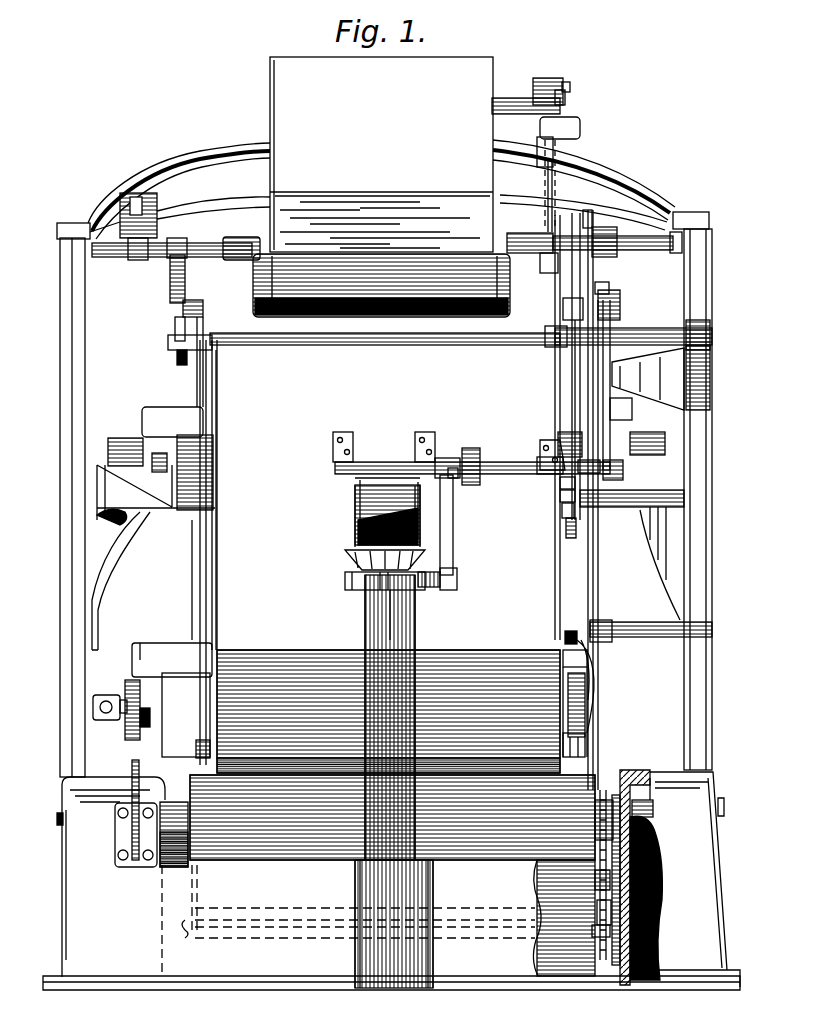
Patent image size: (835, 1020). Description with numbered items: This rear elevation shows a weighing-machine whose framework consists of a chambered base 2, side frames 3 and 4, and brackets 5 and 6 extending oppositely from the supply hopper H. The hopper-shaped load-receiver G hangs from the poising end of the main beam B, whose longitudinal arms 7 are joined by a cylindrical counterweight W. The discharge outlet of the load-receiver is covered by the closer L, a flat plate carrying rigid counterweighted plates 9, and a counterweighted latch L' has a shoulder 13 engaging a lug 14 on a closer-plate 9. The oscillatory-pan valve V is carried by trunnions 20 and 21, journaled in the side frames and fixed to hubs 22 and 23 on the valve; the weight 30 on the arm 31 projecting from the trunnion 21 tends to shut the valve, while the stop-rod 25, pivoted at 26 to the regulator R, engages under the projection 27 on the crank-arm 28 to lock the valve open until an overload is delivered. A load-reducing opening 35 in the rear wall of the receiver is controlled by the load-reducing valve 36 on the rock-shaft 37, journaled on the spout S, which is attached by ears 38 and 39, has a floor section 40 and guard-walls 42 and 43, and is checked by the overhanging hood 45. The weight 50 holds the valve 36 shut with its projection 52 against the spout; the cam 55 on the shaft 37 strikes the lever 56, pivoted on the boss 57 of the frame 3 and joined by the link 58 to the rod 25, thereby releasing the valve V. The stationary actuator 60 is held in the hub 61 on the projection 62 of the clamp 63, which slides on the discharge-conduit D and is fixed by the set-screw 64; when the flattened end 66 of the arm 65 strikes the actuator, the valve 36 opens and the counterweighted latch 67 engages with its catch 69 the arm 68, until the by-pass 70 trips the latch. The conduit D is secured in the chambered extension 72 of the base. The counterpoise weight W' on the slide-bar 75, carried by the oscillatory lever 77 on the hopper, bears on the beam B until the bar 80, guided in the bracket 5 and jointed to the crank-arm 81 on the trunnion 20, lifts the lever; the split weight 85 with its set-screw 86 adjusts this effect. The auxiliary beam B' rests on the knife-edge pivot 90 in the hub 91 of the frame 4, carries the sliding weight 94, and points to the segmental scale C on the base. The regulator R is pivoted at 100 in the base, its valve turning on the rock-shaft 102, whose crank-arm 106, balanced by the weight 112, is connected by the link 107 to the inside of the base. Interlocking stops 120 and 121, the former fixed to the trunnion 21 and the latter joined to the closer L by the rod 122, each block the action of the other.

The chambered bed or base 2 is at (720, 883).
The side frame 3 is at (710, 545).
The side frame 4 is at (62, 380).
The bracket 5 is at (620, 175).
The bracket 6 is at (196, 168).
The longitudinal arms 7 is at (150, 493).
The counterweighted plates 9 is at (200, 713).
The shoulder 13 is at (568, 655).
The lug 14 is at (570, 680).
The trunnion or shaft 20 is at (680, 212).
The trunnion or shaft 21 is at (205, 232).
The hub 22 is at (520, 236).
The hub 23 is at (240, 240).
The stop or rod 25 is at (600, 268).
The pivot 26 is at (595, 820).
The projection 27 is at (590, 228).
The crank-arm 28 is at (617, 236).
The weight 30 is at (150, 193).
The arm 31 is at (125, 200).
The load-reducing opening 35 is at (350, 560).
The load-reducing valve 36 is at (357, 505).
The rock-shaft 37 is at (512, 468).
The ear 38 is at (345, 432).
The ear 39 is at (428, 432).
The spout-floor section 40 is at (368, 540).
The guard-wall 42 is at (420, 510).
The guard-wall 43 is at (370, 490).
The overhanging hood 45 is at (358, 490).
The valve-closing device or weight 50 is at (473, 455).
The projection 52 is at (420, 490).
The trip device 55 is at (614, 432).
The lever 56 is at (615, 305).
The boss 57 is at (665, 330).
The link 58 is at (603, 288).
The stationary actuator 60 is at (453, 540).
The hub 61 is at (457, 580).
The projection 62 is at (430, 588).
The clamp 63 is at (352, 584).
The set-screw 64 is at (405, 595).
The rearwardly-extending arm 65 is at (447, 460).
The flattened end 66 is at (458, 475).
The detent or latch 67 is at (560, 508).
The forward-extending arm 68 is at (550, 442).
The catch 69 is at (560, 487).
The by-pass 70 is at (562, 496).
The chambered extension 72 is at (365, 885).
The reciprocatory slide-bar 75 is at (572, 268).
The oscillatory lever 77 is at (545, 80).
The reciprocatory bar 80 is at (548, 207).
The crank-arm 81 is at (541, 268).
The slidable split weight 85 is at (562, 85).
The set-screw 86 is at (566, 90).
The knife-edge pivot 90 is at (127, 700).
The hub 91 is at (115, 722).
The sliding weight 94 is at (150, 727).
The pivot 100 is at (175, 800).
The pivot 102 is at (595, 935).
The crank-arm 106 is at (597, 905).
The link 107 is at (600, 845).
The weight 112 is at (595, 878).
The interlocking stop 120 is at (172, 276).
The interlocking stop 121 is at (183, 313).
The rod 122 is at (200, 578).
The main beam B is at (122, 579).
The auxiliary beam B' is at (172, 700).
The scale C is at (133, 764).
The discharge-conduit D is at (390, 717).
The load-receiver G is at (247, 500).
The supply hopper or chute H is at (381, 154).
The closer or valve L is at (388, 711).
The latch L' is at (575, 684).
The regulator R is at (392, 817).
The spout S is at (376, 516).
The valve V is at (252, 274).
The cylindrical counterweight W is at (195, 495).
The counterpoise weight W' is at (556, 408).